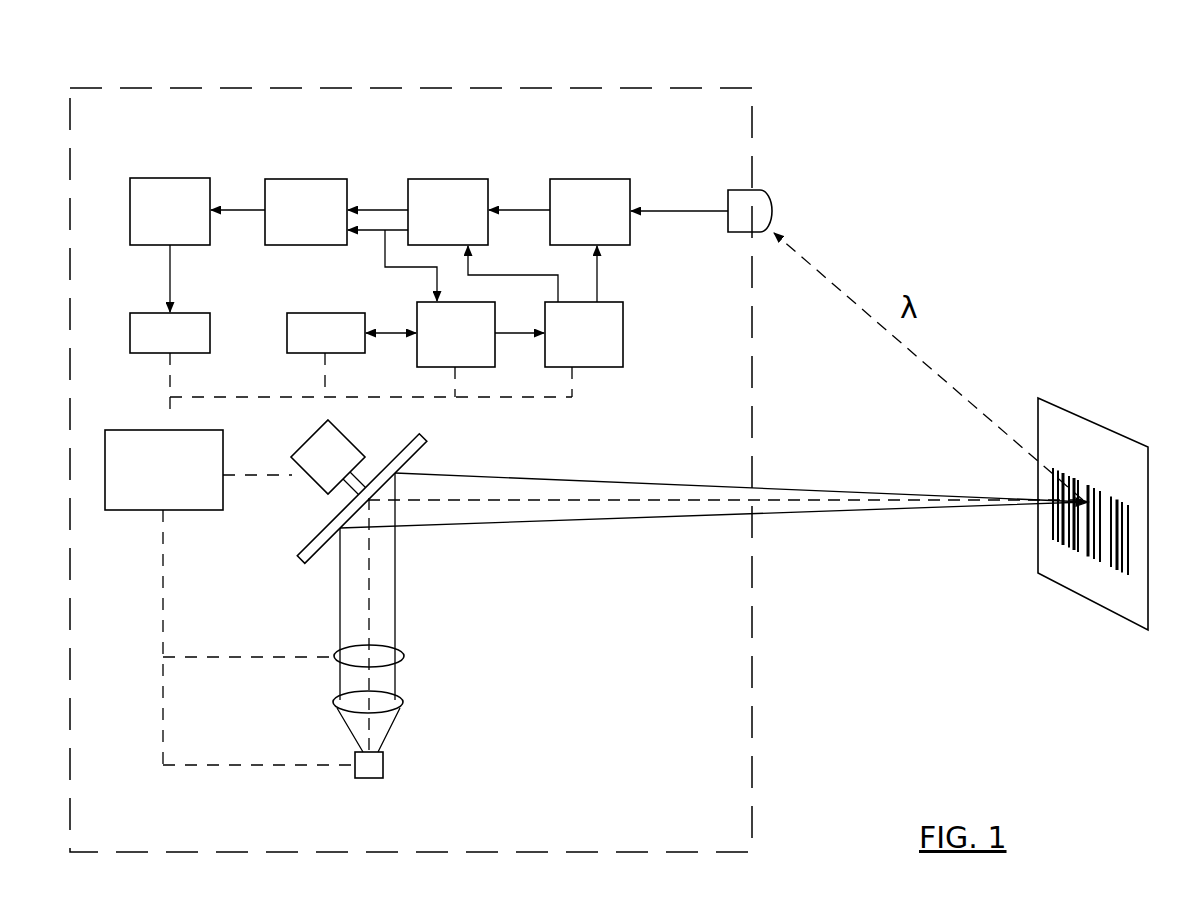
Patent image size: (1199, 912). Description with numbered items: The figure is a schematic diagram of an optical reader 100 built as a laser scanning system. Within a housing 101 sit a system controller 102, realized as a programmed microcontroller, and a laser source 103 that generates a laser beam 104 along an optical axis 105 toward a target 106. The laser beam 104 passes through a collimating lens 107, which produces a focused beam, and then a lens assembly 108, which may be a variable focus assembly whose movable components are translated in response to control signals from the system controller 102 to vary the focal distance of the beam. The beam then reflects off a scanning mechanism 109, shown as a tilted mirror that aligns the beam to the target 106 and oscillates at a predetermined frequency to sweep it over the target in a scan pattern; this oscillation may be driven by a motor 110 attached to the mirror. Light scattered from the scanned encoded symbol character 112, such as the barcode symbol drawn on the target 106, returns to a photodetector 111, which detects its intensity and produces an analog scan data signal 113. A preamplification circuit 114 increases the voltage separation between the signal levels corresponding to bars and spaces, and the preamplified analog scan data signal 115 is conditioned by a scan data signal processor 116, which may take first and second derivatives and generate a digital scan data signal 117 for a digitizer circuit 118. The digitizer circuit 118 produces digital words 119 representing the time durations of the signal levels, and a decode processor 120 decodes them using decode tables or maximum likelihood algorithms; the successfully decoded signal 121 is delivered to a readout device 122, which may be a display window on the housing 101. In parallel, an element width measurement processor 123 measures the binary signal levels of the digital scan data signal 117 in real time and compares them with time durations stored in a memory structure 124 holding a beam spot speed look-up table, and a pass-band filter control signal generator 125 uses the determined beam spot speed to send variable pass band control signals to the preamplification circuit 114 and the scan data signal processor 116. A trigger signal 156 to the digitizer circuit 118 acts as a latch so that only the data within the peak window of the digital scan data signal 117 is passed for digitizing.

The optical reader 100 is at (841, 66).
The housing 101 is at (457, 88).
The system controller 102 is at (164, 470).
The laser source 103 is at (383, 765).
The laser beam 104 is at (810, 512).
The optical axis 105 is at (525, 503).
The target 106 is at (1068, 411).
The collimating lens 107 is at (404, 700).
The lens assembly 108 is at (404, 656).
The scanning mechanism 109 is at (426, 439).
The motor 110 is at (328, 457).
The photodetector 111 is at (767, 194).
The encoded symbol character 112 is at (1102, 553).
The analog scan data signal 113 is at (662, 209).
The preamplification circuit 114 is at (590, 212).
The preamplified analog scan data signal 115 is at (518, 208).
The scan data signal processor 116 is at (448, 212).
The digital scan data signal 117 is at (377, 231).
The digitizer circuit 118 is at (306, 212).
The digital words 119 is at (242, 208).
The decode processor 120 is at (170, 211).
The decoded signal 121 is at (168, 283).
The readout device 122 is at (170, 333).
The element width measurement processor 123 is at (456, 334).
The memory structure 124 is at (326, 333).
The pass-band filter control signal generator 125 is at (584, 334).
The trigger signal 156 is at (376, 208).